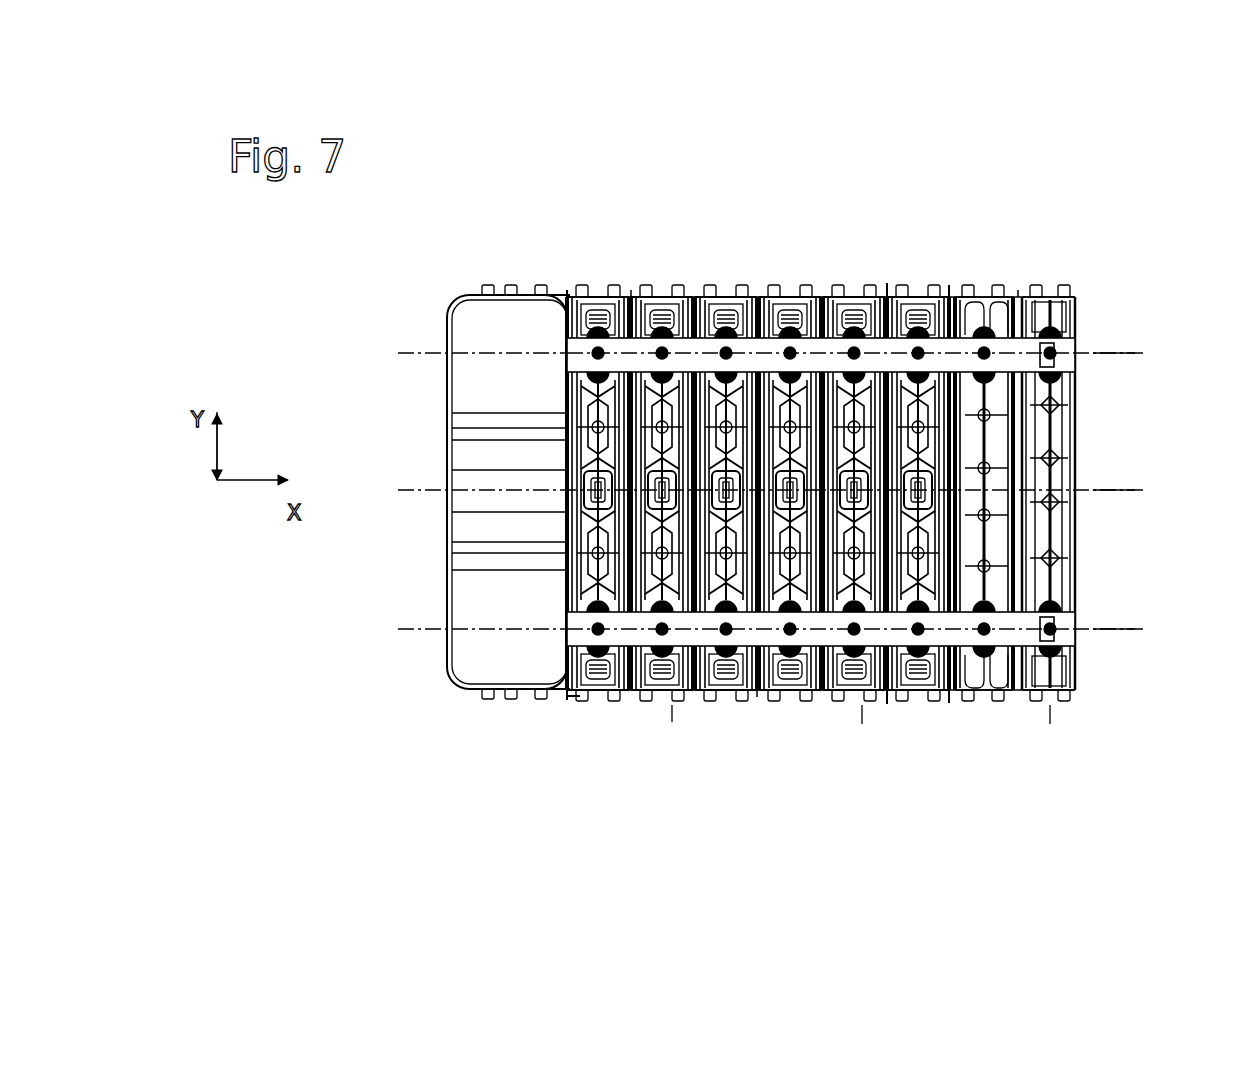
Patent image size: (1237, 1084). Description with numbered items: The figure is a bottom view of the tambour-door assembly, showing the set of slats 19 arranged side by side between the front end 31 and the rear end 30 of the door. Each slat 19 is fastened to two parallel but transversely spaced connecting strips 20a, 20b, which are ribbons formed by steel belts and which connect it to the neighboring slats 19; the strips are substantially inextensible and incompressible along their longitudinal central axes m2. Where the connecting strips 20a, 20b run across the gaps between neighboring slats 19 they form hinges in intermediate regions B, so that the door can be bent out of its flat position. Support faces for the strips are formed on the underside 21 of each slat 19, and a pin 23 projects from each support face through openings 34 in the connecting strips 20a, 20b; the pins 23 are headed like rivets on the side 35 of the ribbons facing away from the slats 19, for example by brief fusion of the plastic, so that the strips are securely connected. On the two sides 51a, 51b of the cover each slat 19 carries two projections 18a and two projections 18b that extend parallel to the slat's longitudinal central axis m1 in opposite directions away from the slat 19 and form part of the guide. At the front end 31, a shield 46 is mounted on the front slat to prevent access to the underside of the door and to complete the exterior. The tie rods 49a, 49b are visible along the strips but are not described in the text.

The projections 18a is at (812, 705).
The projections 18b is at (688, 283).
The slat 19 is at (738, 700).
The connecting strip 20a is at (575, 700).
The connecting strip 20b is at (577, 287).
The underside 21 is at (840, 285).
The pin 23 is at (652, 285).
The rear end 30 is at (760, 501).
The front end 31 is at (442, 492).
The openings 34 is at (958, 285).
The side 35 is at (920, 285).
The shield 46 is at (468, 383).
The lower tie rod 49a is at (767, 710).
The upper tie rod 49b is at (753, 243).
The side 51a is at (912, 745).
The side 51b is at (897, 270).
The intermediate regions B is at (636, 283).
The longitudinal central axis of the slat m1 is at (672, 722).
The longitudinal central axis of the connecting strip m2 is at (1112, 353).